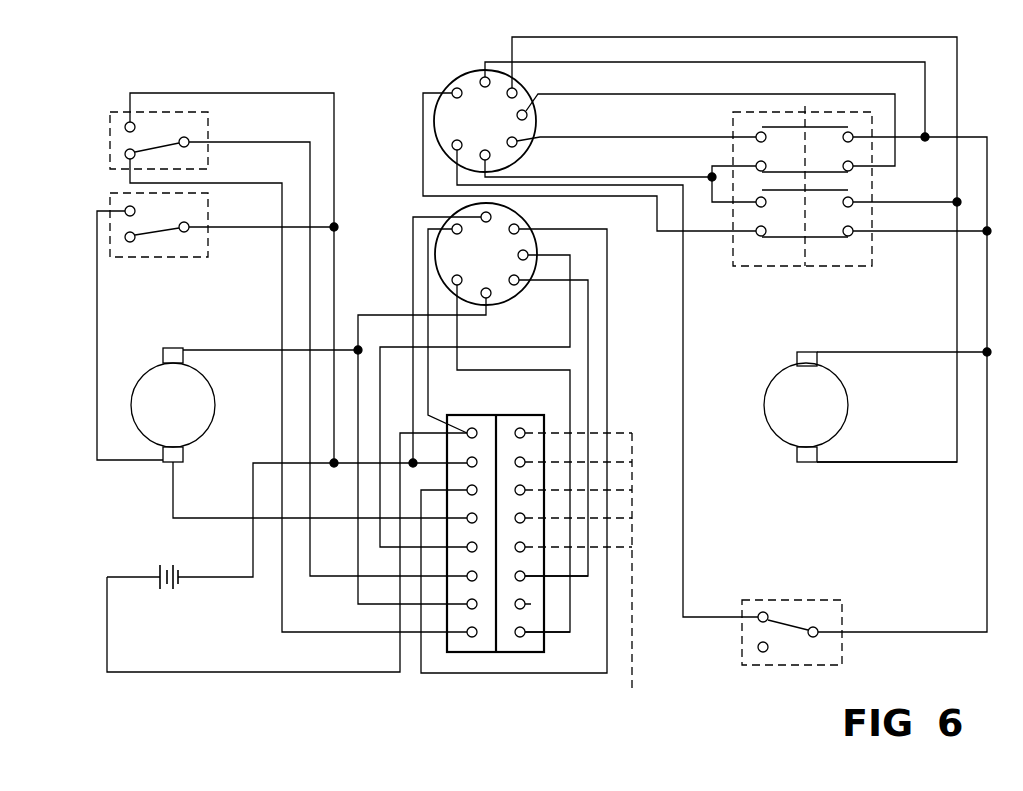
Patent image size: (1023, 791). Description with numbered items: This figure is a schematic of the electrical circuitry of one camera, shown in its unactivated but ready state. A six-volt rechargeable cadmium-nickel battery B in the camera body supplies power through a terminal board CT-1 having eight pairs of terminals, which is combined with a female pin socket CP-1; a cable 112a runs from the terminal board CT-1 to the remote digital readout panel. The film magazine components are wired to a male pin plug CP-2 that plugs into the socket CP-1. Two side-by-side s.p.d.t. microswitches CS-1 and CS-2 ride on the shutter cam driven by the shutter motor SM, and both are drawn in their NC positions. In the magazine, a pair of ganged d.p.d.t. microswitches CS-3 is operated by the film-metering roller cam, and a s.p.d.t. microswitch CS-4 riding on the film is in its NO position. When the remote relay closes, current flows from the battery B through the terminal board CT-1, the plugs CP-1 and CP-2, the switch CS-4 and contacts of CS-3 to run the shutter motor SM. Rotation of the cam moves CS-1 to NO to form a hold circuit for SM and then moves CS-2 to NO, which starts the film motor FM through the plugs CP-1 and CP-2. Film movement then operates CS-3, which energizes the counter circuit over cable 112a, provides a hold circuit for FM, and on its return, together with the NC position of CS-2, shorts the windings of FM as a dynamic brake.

The cable 112a is at (632, 673).
The s.p.d.t. microswitch CS-1 is at (185, 326).
The s.p.d.t. microswitch CS-2 is at (257, 362).
The ganged d.p.d.t. microswitches CS-3 is at (851, 369).
The s.p.d.t. microswitch CS-4 is at (792, 621).
The female pin socket CP-1 is at (482, 436).
The male pin plug CP-2 is at (692, 327).
The terminal board CT-1 is at (539, 522).
The shutter motor SM is at (299, 432).
The film motor FM is at (875, 406).
The battery B is at (287, 552).